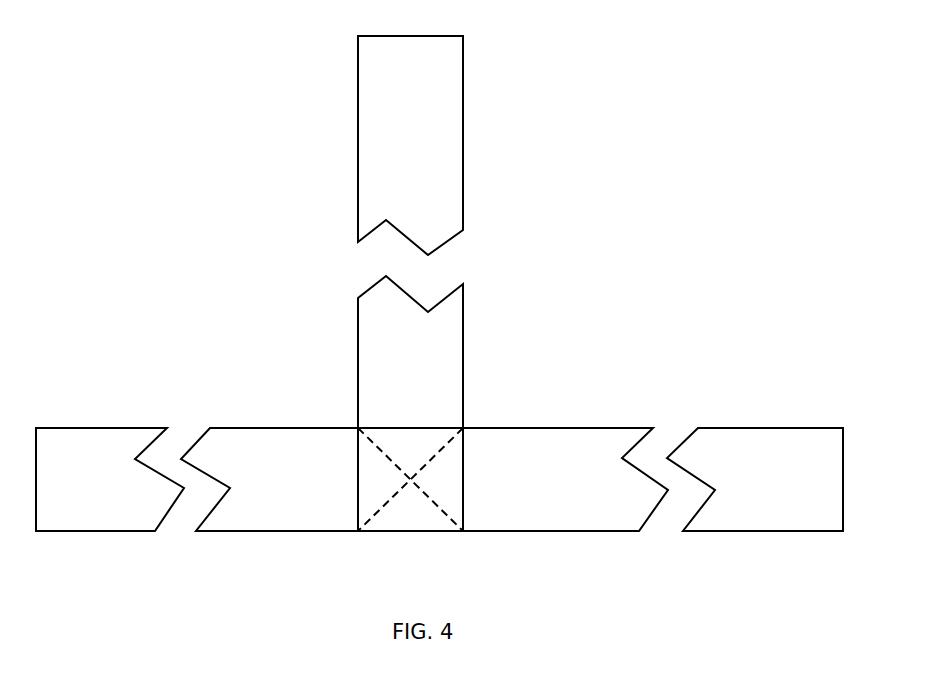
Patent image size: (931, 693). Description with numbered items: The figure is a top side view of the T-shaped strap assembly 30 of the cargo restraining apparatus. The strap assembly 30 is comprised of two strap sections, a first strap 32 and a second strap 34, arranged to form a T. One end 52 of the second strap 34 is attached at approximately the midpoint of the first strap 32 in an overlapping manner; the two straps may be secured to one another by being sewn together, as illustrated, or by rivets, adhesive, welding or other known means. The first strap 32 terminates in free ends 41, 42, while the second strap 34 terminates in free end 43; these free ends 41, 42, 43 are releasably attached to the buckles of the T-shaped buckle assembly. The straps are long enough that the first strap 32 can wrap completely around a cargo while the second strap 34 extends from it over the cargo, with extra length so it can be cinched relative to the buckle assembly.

The T-shaped strap assembly 30 is at (540, 368).
The first strap 32 is at (575, 428).
The second strap 34 is at (375, 360).
The free end 41 is at (755, 447).
The free end 42 is at (60, 437).
The free end 43 is at (438, 108).
The end of strap 52 is at (463, 501).